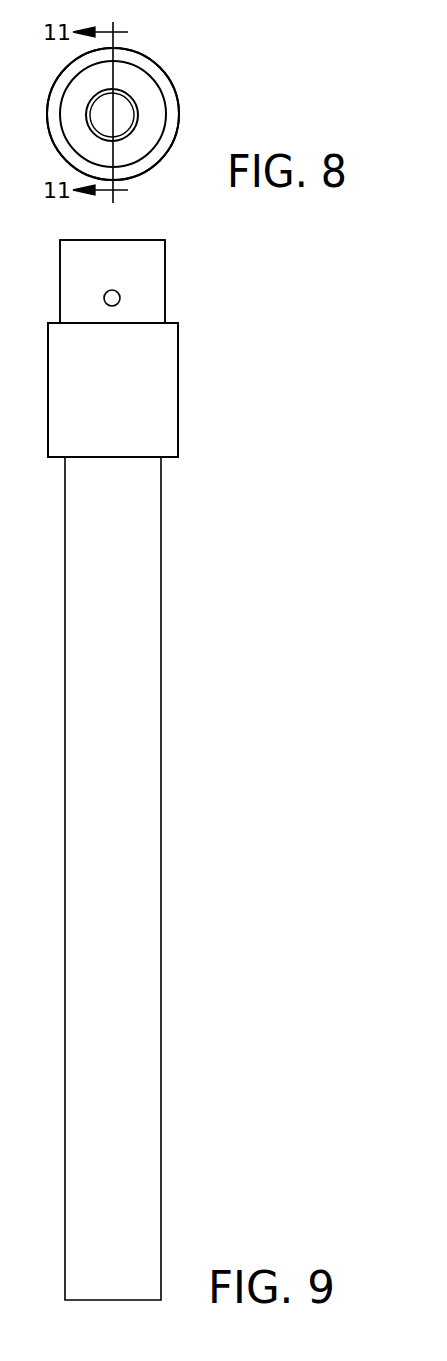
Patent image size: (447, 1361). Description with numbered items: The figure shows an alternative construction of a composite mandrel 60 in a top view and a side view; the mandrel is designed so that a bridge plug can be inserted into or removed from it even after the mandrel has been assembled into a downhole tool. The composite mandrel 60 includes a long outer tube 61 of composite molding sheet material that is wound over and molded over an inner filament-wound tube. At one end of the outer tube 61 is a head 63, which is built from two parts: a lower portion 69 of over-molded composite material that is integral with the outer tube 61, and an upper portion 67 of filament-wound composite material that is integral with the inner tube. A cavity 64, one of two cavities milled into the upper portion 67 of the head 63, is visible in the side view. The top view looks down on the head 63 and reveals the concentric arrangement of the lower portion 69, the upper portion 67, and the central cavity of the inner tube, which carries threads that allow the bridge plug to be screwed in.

In FIG. 8, the composite mandrel 60 is at (228, 79).
In FIG. 9, the composite mandrel 60 is at (262, 301).
In FIG. 9, the outer tube 61 is at (155, 627).
In FIG. 8, the head 63 is at (188, 108).
In FIG. 9, the head 63 is at (199, 347).
In FIG. 9, the cavity 64 is at (120, 293).
In FIG. 8, the upper portion 67 is at (148, 77).
In FIG. 9, the upper portion 67 is at (160, 298).
In FIG. 8, the lower portion 69 is at (147, 57).
In FIG. 9, the lower portion 69 is at (172, 422).